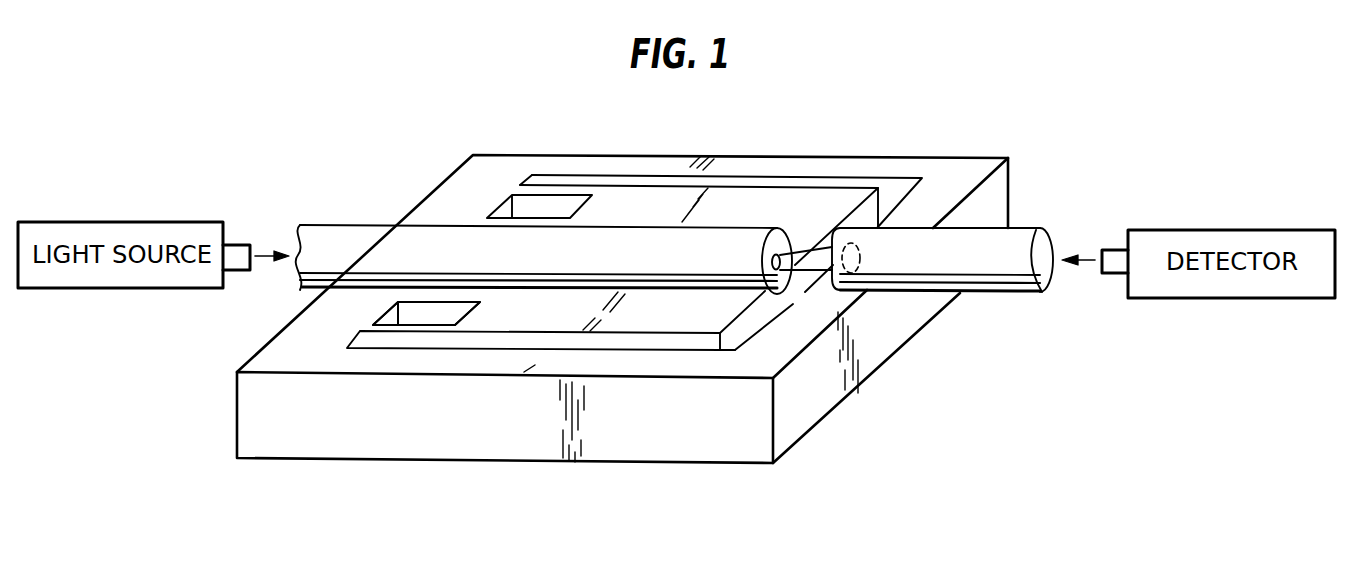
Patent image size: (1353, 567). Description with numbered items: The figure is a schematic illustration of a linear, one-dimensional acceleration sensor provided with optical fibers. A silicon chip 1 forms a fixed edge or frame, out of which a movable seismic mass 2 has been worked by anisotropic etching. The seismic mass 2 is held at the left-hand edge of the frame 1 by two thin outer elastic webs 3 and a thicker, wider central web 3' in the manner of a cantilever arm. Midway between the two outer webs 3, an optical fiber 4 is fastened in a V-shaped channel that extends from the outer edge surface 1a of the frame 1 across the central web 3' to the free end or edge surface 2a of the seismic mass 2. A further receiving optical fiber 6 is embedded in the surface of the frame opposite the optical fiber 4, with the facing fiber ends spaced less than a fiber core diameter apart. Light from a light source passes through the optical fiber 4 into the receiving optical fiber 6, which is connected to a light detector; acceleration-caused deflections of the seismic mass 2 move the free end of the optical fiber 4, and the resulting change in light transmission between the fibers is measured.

The silicon chip 1 is at (813, 322).
The outer edge surface 1a is at (437, 192).
The seismic mass 2 is at (620, 208).
The free end or edge surface 2a is at (737, 331).
The outer elastic webs 3 is at (399, 276).
The central web 3' is at (360, 309).
The optical fiber 4 is at (330, 246).
The receiving optical fiber 6 is at (1012, 247).